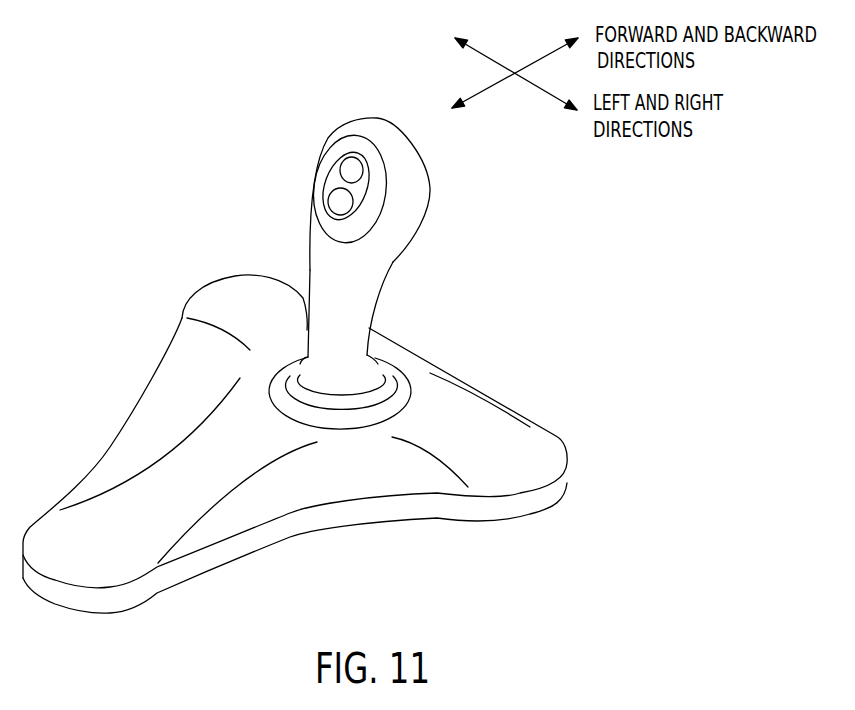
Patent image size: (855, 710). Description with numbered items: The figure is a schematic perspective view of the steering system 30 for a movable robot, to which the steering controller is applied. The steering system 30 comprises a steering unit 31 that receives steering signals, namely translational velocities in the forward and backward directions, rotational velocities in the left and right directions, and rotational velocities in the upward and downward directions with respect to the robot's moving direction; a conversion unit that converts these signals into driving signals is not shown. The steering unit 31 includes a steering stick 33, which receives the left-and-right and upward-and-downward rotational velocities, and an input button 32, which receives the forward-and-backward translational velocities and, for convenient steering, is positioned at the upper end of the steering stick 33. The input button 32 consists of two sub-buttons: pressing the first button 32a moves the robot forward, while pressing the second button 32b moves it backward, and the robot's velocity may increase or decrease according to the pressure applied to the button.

The steering system 30 is at (220, 142).
The steering unit 31 is at (452, 248).
The input button 32 is at (327, 185).
The first button 32a is at (352, 168).
The second button 32b is at (340, 203).
The steering stick 33 is at (373, 303).